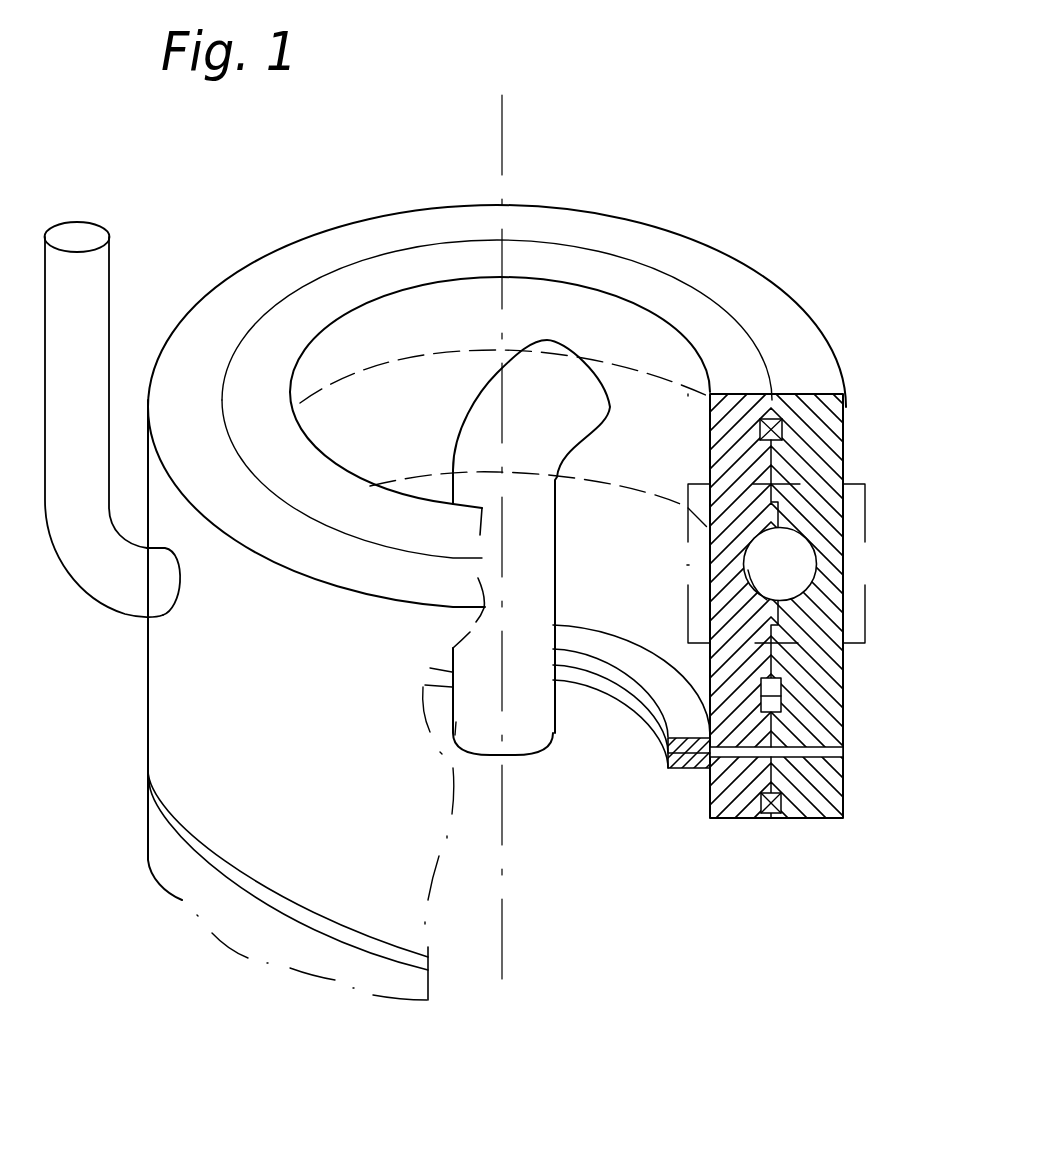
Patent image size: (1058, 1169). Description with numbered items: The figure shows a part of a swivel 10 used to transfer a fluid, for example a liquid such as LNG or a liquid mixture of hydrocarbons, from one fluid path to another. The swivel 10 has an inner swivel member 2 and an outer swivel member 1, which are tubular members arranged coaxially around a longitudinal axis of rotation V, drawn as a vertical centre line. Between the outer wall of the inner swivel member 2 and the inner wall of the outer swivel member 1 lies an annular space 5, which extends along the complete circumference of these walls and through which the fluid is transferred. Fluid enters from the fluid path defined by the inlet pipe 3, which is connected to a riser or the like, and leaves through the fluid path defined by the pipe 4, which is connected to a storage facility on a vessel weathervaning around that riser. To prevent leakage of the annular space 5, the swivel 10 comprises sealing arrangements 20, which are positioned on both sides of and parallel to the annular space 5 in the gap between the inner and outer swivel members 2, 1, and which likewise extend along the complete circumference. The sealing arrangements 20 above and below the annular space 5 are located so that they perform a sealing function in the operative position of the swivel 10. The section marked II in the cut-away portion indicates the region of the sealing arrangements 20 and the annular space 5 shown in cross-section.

The outer swivel member 1 is at (660, 228).
The inner swivel member 2 is at (578, 263).
The inlet pipe 3 is at (517, 728).
The pipe 4 is at (100, 292).
The annular space 5 is at (782, 578).
The swivel 10 is at (218, 239).
The sealing arrangement 20 is at (620, 487).
The section line II is at (865, 563).
The longitudinal axis of rotation V is at (501, 152).